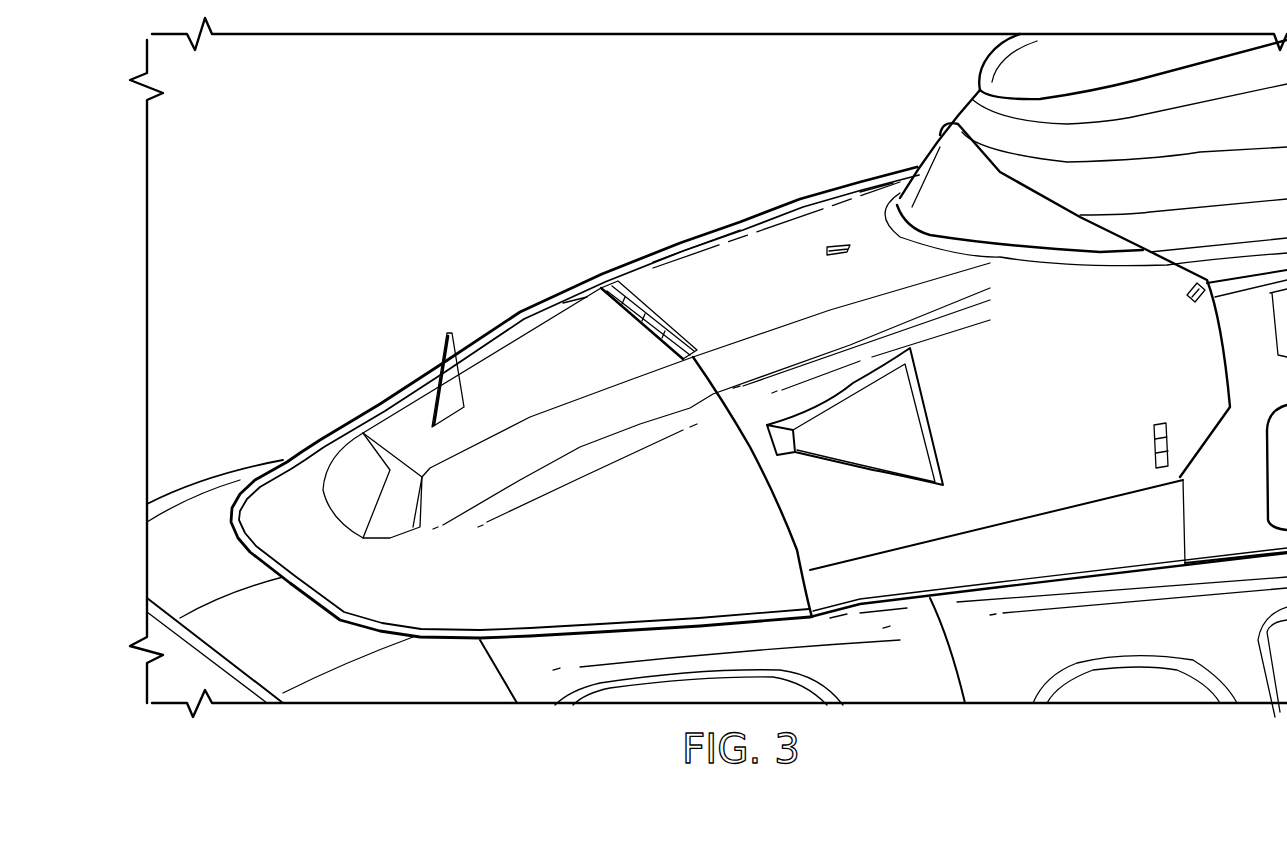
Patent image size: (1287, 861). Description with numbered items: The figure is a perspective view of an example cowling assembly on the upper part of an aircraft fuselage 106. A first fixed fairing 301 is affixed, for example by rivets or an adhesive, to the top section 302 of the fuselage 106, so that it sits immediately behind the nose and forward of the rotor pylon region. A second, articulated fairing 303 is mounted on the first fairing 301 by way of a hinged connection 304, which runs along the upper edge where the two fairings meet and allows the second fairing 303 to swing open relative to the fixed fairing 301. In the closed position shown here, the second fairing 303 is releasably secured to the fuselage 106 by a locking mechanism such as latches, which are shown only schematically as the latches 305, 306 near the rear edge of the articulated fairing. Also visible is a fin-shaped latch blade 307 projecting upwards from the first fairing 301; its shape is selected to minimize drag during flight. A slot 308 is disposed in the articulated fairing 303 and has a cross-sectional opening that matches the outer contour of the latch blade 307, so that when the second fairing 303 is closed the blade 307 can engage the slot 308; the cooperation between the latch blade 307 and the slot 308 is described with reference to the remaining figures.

The fuselage 106 is at (253, 475).
The first fixed fairing 301 is at (347, 428).
The nose panel 302 is at (208, 510).
The second articulated fairing 303 is at (720, 250).
The hinged connection 304 is at (640, 303).
The latch 305 is at (1187, 297).
The latch 306 is at (1153, 447).
The latch blade 307 is at (437, 367).
The slot 308 is at (830, 243).